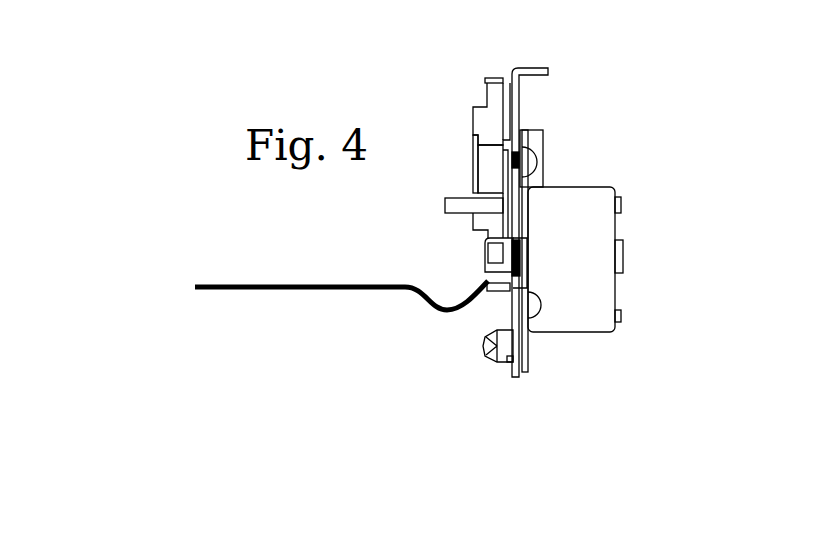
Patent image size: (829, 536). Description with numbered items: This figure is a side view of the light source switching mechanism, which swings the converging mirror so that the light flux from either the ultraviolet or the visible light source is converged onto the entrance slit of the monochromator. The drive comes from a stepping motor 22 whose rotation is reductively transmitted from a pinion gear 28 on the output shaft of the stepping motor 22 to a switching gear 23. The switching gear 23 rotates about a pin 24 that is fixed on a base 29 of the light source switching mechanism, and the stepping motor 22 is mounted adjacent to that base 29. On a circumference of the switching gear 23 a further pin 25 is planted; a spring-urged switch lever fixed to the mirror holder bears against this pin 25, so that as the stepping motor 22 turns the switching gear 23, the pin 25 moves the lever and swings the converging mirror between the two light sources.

The stepping motor 22 is at (589, 177).
The switching gear 23 is at (494, 76).
The pin 24 is at (471, 153).
The pin 25 is at (443, 193).
The pinion gear 28 is at (484, 279).
The base 29 is at (549, 68).